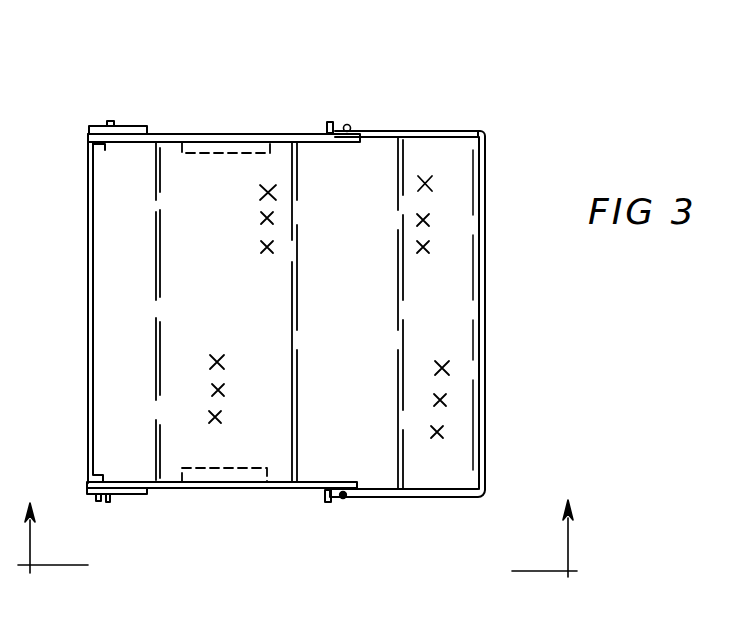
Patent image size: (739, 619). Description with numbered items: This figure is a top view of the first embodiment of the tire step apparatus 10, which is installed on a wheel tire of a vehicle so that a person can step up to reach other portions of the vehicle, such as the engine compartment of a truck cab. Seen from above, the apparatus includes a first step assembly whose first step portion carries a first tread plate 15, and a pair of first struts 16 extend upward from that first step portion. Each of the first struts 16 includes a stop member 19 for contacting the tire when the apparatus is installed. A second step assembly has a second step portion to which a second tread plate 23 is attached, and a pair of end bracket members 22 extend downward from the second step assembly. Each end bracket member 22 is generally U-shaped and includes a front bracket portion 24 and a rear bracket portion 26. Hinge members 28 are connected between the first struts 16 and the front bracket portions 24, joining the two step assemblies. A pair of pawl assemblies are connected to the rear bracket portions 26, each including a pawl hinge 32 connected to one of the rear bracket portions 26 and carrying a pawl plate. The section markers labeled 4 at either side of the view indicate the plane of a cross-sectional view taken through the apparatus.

The tire step apparatus 10 is at (273, 118).
The first tread plate 15 is at (442, 472).
The first struts 16 is at (386, 133).
The stop member 19 is at (330, 122).
The end bracket members 22 is at (222, 135).
The second tread plate 23 is at (188, 435).
The front bracket portion 24 is at (322, 143).
The rear bracket portion 26 is at (132, 142).
The hinge members 28 is at (348, 124).
The pawl hinge 32 is at (103, 126).
The section line 4- 4 is at (298, 554).